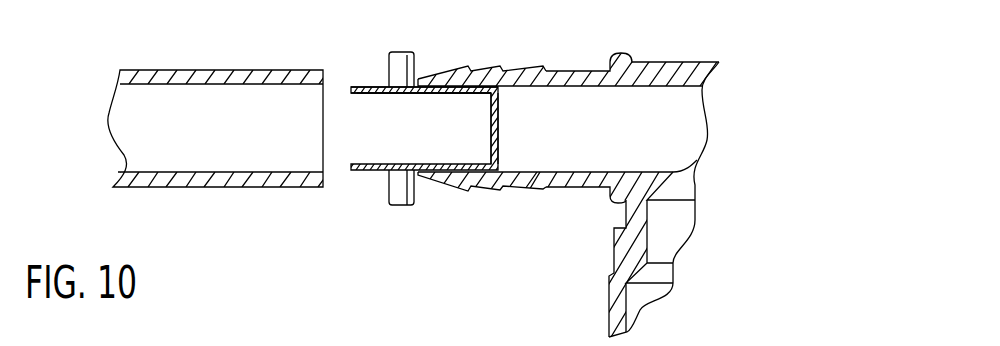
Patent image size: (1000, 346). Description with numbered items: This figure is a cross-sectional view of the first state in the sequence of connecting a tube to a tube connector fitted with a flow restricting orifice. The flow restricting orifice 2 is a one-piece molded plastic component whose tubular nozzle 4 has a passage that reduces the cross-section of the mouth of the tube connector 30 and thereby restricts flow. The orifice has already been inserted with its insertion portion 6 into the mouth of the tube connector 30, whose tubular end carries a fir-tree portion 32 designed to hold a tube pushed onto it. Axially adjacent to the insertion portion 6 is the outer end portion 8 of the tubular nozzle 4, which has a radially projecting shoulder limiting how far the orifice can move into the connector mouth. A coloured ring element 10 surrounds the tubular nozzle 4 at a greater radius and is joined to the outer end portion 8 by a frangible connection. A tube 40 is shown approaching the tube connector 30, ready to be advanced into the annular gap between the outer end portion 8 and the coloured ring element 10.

The flow restricting orifice 2 is at (423, 122).
The tubular nozzle 4 is at (480, 127).
The insertion portion 6 is at (447, 93).
The outer end portion 8 is at (372, 83).
The coloured ring element 10 is at (401, 50).
The tube connector 30 is at (569, 168).
The fir-tree portion 32 is at (493, 70).
The tube 40 is at (213, 70).